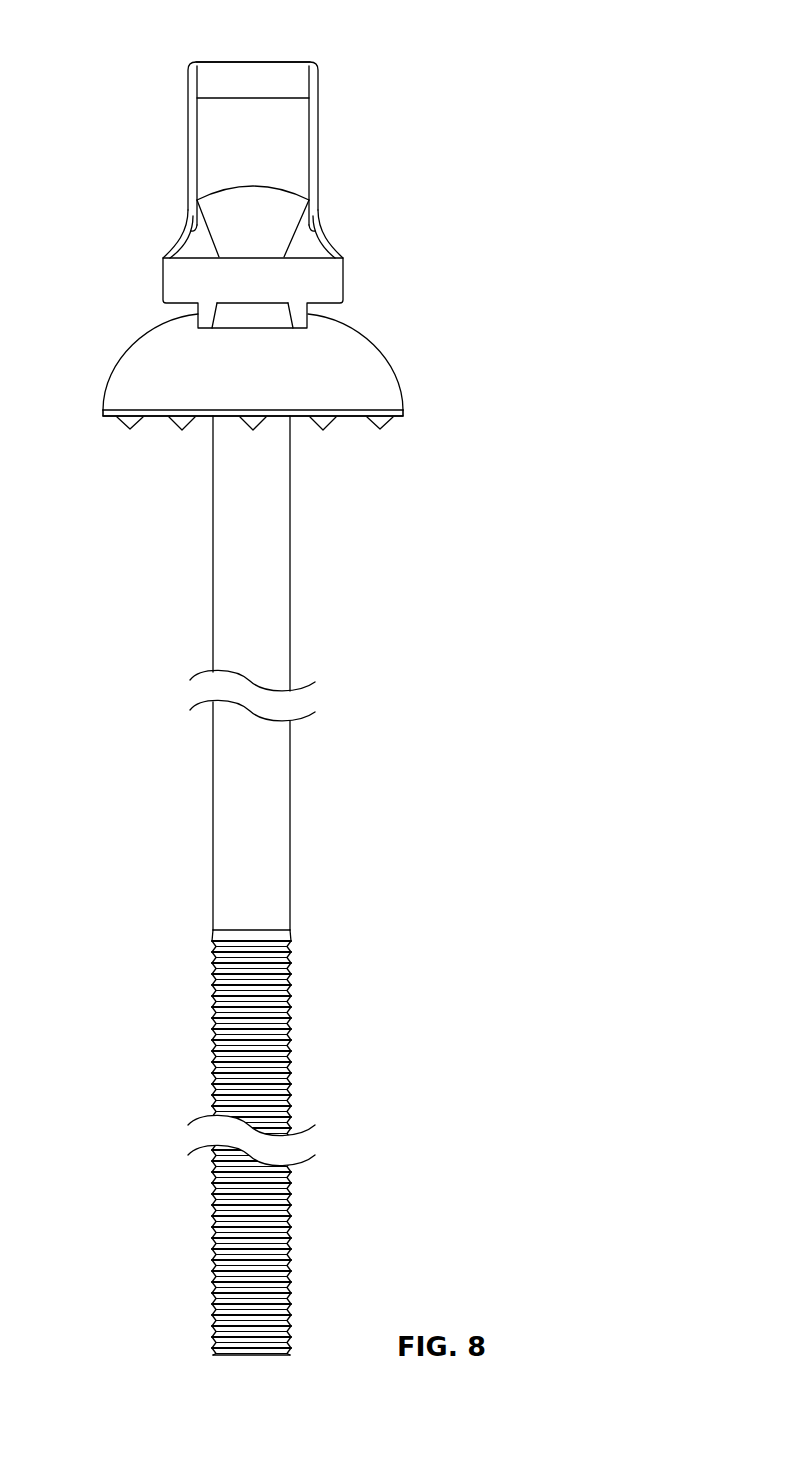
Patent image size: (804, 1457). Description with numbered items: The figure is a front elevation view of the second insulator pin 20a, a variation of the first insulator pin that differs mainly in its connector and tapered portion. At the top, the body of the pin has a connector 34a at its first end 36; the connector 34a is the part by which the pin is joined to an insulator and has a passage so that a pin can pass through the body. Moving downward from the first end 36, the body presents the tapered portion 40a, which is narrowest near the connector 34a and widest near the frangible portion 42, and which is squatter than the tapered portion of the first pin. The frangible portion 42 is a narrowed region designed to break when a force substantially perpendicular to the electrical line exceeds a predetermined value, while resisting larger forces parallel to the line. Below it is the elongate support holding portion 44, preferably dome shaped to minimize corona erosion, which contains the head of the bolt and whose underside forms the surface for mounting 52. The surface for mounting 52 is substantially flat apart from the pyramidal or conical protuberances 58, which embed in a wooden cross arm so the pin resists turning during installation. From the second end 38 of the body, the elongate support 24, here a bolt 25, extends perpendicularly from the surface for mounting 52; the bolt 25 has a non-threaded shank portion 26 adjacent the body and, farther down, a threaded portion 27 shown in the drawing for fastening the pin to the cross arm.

The insulator pin 20a is at (402, 43).
The connector 34a is at (178, 117).
The first end 36 is at (237, 58).
The tapered portion 40a is at (343, 278).
The frangible portion 42 is at (193, 310).
The elongate support holding portion 44 is at (387, 362).
The surface for mounting 52 is at (115, 418).
The protuberances 58 is at (115, 417).
The second end 38 is at (307, 420).
The elongate support 24 is at (407, 653).
The bolt 25 is at (287, 622).
The non-threaded shank portion 26 is at (218, 647).
The threaded portion 27 is at (288, 1070).